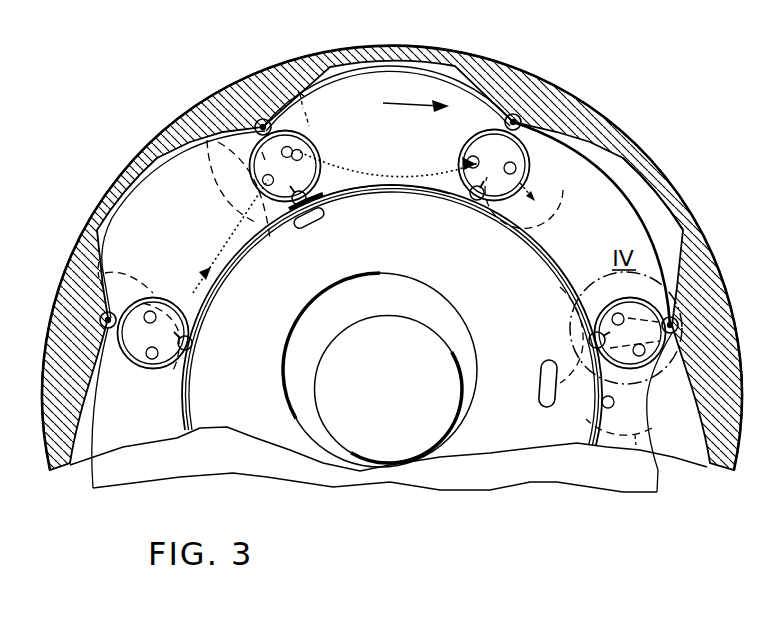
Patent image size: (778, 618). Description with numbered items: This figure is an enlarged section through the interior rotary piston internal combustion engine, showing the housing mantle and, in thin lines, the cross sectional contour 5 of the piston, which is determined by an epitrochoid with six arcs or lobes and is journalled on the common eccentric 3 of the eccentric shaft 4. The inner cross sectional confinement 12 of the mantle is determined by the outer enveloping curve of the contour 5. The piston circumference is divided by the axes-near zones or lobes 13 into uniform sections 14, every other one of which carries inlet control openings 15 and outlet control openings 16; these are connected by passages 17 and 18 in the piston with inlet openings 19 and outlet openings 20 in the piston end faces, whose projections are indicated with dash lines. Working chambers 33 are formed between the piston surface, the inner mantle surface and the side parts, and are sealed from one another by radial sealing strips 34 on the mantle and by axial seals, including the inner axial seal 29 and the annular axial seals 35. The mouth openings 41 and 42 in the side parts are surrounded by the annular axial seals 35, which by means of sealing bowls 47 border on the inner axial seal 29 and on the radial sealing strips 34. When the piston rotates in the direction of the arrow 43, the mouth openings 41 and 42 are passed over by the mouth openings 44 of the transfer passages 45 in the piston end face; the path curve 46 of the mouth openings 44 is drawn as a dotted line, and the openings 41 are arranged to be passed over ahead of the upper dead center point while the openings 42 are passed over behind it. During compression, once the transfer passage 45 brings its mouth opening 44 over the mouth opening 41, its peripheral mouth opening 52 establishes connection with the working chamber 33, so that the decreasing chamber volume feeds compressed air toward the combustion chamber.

The eccentric 3 is at (422, 292).
The eccentric shaft 4 is at (411, 369).
The cross sectional contour 5 is at (90, 487).
The inner cross sectional confinement 12 is at (617, 152).
The lobes 13 is at (301, 130).
The uniform sections 14 is at (390, 66).
The inlet control openings 15 is at (103, 287).
The outlet control openings 16 is at (207, 147).
The inlet passages 17 is at (130, 287).
The outlet passages 18 is at (227, 190).
The inlet openings 19 is at (167, 377).
The outlet openings 20 is at (298, 232).
The inner axial seal 29 is at (230, 280).
The working chamber 33 is at (331, 68).
The radial sealing strips 34 is at (263, 119).
The annular axial seals 35 is at (182, 298).
The mouth openings 41 is at (287, 207).
The mouth openings 42 is at (305, 152).
The arrow 43 is at (412, 100).
The mouth openings 44 is at (263, 157).
The transfer passages 45 is at (312, 118).
The path curve 46 is at (415, 185).
The sealing bowls 47 is at (300, 216).
The mouth opening 52 is at (306, 100).